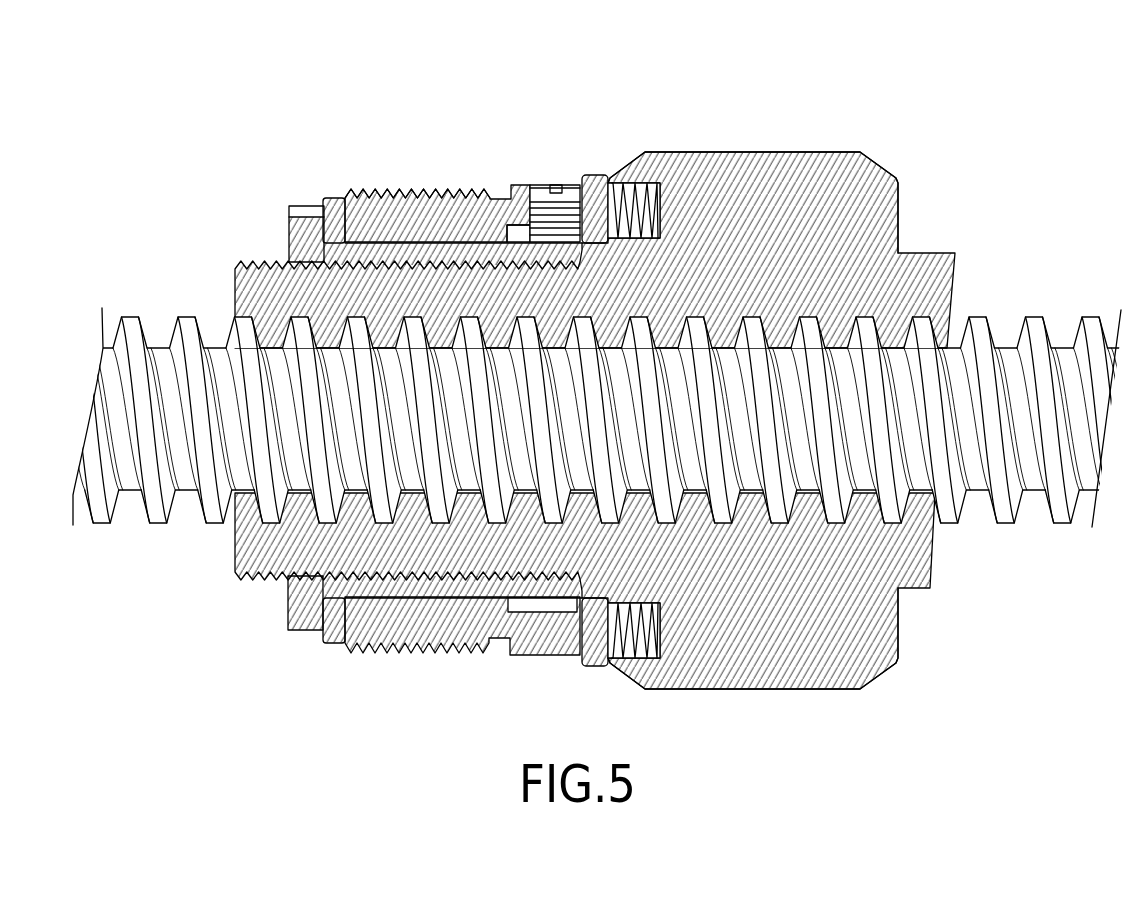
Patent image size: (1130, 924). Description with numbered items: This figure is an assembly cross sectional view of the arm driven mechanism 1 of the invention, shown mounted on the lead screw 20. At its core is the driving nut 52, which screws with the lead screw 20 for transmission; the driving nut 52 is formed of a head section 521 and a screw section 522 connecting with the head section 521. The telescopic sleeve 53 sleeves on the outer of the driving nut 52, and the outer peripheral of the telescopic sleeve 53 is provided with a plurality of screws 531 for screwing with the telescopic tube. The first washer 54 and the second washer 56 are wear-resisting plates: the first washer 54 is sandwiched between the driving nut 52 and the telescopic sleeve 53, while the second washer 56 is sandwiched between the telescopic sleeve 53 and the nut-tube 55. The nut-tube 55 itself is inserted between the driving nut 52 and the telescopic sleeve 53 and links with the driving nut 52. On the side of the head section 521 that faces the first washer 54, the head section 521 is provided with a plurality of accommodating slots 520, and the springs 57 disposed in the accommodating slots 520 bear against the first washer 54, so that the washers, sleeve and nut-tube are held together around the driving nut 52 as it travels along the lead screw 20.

The ball screw assembly 1 is at (962, 38).
The lead screw 20 is at (1043, 357).
The driving nut 52 is at (903, 191).
The accommodating slots 520 is at (637, 187).
The head section 521 is at (787, 183).
The screw section 522 is at (383, 290).
The telescopic sleeve 53 is at (462, 370).
The screws 531 is at (412, 190).
The first washer 54 is at (595, 190).
The nut-tube 55 is at (300, 235).
The second washer 56 is at (337, 207).
The springs 57 is at (647, 210).